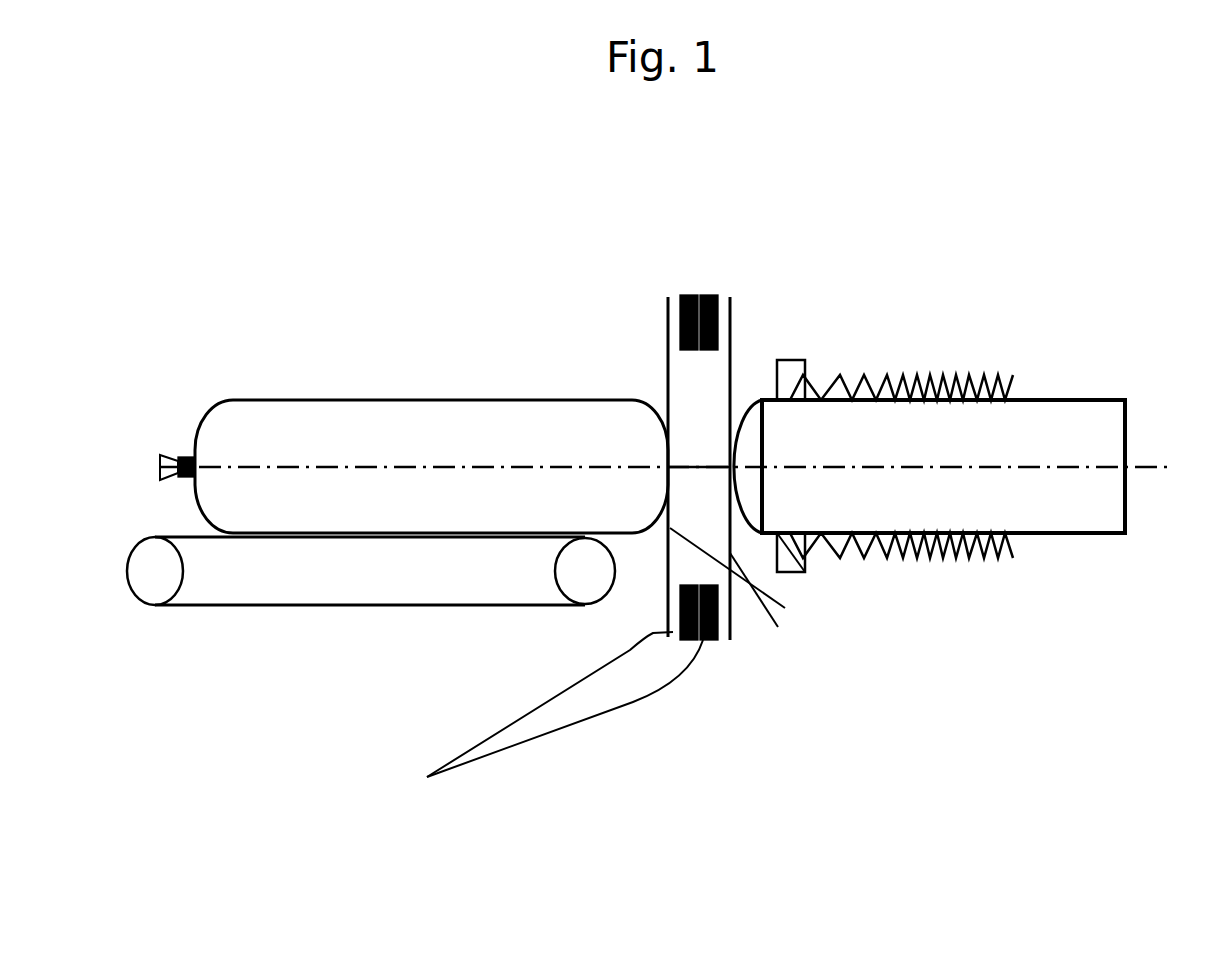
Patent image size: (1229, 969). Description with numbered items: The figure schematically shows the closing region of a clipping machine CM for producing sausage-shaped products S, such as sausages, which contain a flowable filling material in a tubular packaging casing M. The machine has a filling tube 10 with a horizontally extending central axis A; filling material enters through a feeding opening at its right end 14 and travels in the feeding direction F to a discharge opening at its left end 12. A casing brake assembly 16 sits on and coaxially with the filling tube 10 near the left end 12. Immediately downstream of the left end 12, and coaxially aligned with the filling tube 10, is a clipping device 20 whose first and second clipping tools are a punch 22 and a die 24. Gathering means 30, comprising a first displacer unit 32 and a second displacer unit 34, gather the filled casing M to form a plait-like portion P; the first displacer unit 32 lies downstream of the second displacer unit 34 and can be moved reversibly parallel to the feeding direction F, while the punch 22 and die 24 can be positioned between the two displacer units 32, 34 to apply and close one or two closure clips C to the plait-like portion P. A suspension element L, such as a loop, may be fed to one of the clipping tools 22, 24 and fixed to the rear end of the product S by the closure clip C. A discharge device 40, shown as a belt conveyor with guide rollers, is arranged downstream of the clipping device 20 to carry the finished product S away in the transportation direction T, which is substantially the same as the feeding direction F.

The filling tube 10 is at (964, 464).
The left end 12 is at (767, 495).
The right end 14 is at (1125, 428).
The casing brake assembly 16 is at (777, 400).
The clipping device 20 is at (645, 461).
The punch 22 is at (718, 321).
The die 24 is at (680, 613).
The gathering means 30 is at (765, 643).
The first displacer unit 32 is at (772, 607).
The second displacer unit 34 is at (748, 576).
The discharge device 40 is at (395, 625).
The central axis A is at (1166, 467).
The closure clip C is at (177, 458).
The clipping machine CM is at (874, 233).
The feeding direction F is at (1077, 485).
The suspension element L is at (630, 700).
The tubular packaging casing M is at (970, 380).
The plait-like portion P is at (698, 465).
The sausage-shaped product S is at (416, 400).
The transportation direction T is at (438, 550).